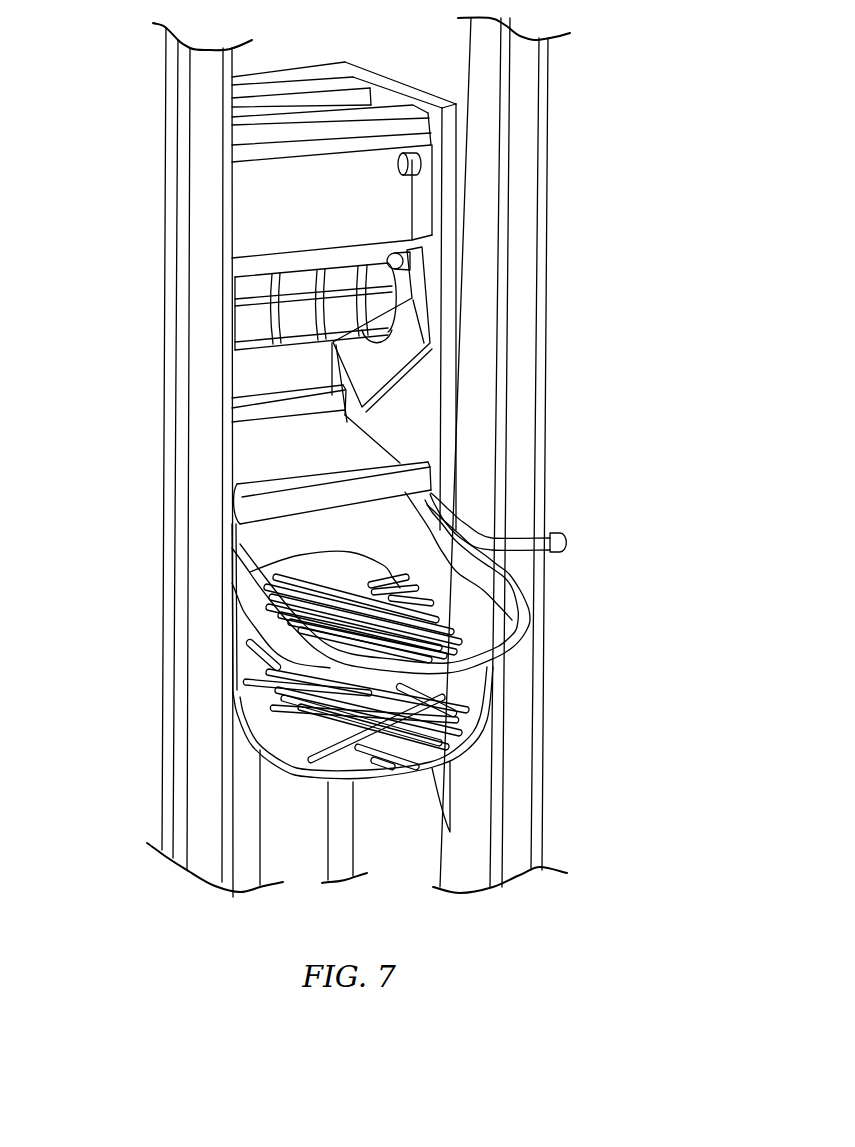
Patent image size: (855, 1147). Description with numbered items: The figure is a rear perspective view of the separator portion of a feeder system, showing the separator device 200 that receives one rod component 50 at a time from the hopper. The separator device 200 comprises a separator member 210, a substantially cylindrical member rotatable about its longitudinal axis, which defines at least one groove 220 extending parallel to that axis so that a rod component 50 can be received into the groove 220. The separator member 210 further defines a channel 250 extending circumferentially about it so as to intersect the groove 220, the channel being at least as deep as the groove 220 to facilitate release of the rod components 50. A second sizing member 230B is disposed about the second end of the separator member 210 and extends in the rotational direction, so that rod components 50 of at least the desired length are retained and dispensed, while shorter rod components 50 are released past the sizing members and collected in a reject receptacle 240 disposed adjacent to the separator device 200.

The separator device 200 is at (613, 221).
The separator member 210 is at (340, 278).
The groove 220 is at (300, 275).
The channel 250 is at (257, 277).
The second sizing member 230B is at (392, 348).
The reject receptacle 240 is at (460, 603).
The rod component 50 is at (275, 342).